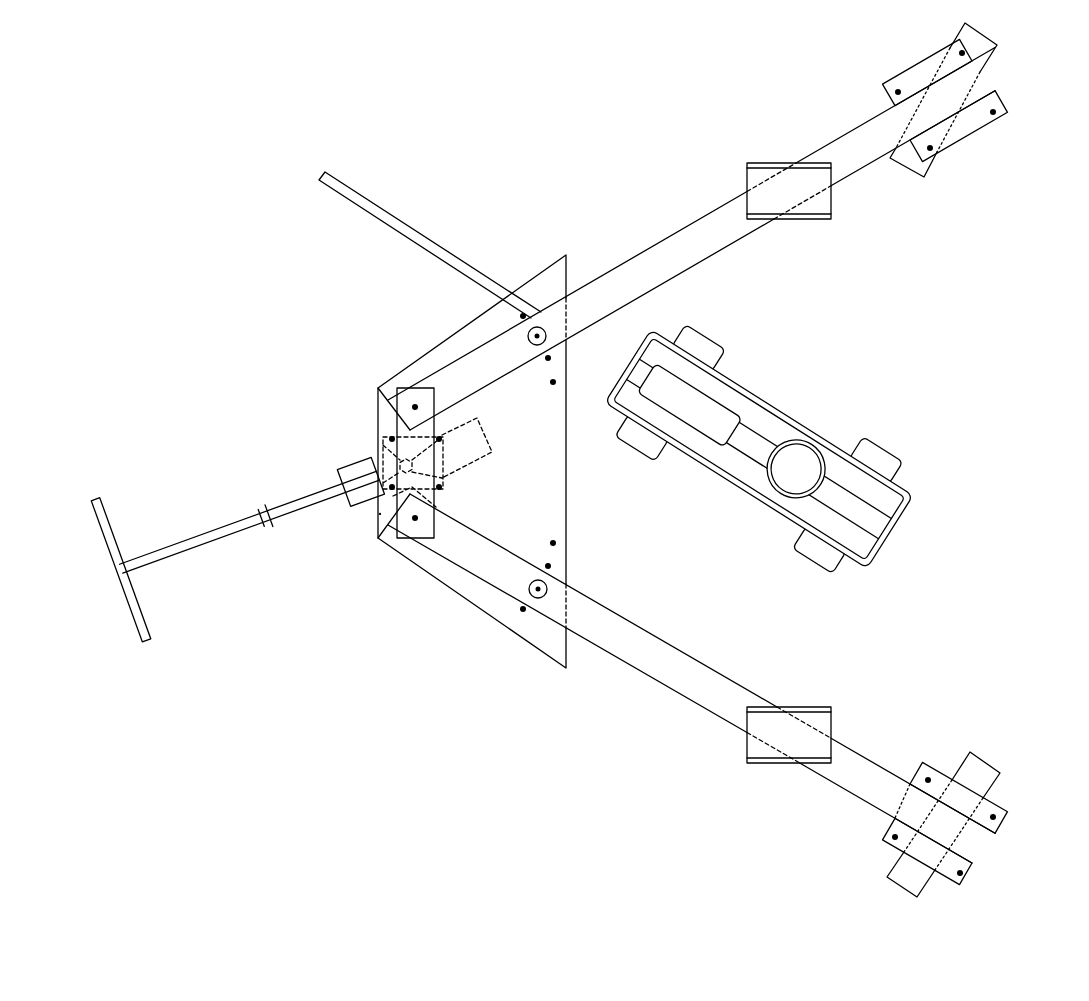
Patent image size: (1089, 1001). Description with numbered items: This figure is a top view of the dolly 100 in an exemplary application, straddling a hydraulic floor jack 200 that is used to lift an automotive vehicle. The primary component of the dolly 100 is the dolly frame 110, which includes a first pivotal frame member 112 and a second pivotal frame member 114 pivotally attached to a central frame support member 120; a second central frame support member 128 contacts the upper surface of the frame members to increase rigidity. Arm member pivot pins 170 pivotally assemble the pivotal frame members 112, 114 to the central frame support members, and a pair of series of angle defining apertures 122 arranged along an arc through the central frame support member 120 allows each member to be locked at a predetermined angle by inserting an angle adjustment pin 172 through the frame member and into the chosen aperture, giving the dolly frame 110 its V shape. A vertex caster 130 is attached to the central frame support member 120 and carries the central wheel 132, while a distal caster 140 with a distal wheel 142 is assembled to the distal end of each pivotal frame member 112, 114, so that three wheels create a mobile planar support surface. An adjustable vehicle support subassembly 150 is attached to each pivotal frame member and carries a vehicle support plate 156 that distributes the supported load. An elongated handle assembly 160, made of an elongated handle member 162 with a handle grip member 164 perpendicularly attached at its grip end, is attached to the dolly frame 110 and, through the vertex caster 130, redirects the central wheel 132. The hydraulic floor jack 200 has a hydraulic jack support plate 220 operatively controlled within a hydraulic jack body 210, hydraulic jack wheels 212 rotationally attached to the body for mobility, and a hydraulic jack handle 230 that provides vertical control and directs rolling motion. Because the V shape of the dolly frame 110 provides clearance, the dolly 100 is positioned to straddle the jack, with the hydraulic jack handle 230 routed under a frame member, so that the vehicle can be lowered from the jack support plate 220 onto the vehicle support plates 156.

The dolly 100 is at (430, 733).
The dolly frame 110 is at (615, 678).
The first pivotal frame member 112 is at (712, 258).
The second pivotal frame member 114 is at (703, 709).
The central frame support member 120 is at (433, 577).
The angle defining apertures 122 is at (523, 609).
The second central frame support member 128 is at (380, 514).
The vertex caster 130 is at (380, 443).
The central wheel 132 is at (347, 467).
The distal caster 140 is at (970, 140).
The distal wheel 142 is at (993, 60).
The adjustable vehicle support subassembly 150 is at (813, 236).
The vehicle support plate 156 is at (785, 163).
The elongated handle assembly 160 is at (180, 493).
The elongated handle member 162 is at (212, 543).
The handle grip member 164 is at (125, 603).
The arm member pivot pins 170 is at (415, 407).
The angle adjustment pin 172 is at (528, 337).
The hydraulic floor jack 200 is at (811, 398).
The hydraulic jack body 210 is at (733, 492).
The hydraulic jack wheels 212 is at (810, 563).
The hydraulic jack support plate 220 is at (813, 442).
The hydraulic jack handle 230 is at (423, 236).